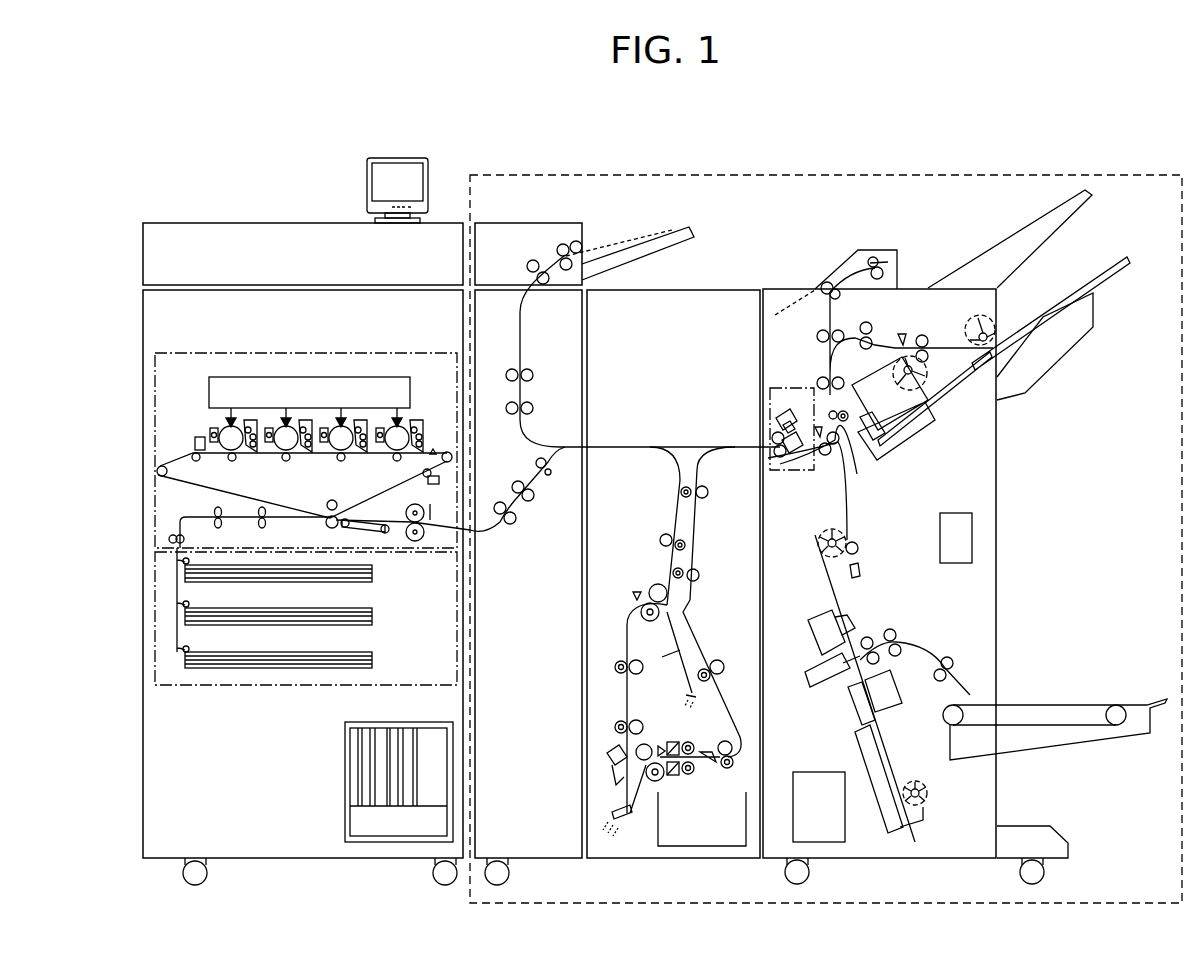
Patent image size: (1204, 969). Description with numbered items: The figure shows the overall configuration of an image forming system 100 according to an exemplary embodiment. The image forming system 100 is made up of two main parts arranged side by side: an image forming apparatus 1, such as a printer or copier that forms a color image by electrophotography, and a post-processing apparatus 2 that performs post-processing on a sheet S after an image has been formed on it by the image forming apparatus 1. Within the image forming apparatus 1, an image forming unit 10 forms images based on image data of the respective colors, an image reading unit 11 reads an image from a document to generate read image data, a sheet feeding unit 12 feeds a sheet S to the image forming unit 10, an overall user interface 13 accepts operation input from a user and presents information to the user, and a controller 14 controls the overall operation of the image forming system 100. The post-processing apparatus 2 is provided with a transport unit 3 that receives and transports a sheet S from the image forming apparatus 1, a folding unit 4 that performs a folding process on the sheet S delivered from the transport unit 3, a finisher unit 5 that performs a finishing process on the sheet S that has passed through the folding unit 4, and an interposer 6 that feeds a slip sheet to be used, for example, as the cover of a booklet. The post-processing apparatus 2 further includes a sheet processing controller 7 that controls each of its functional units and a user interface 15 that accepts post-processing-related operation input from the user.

The image forming system 100 is at (545, 165).
The image forming apparatus 1 is at (264, 222).
The post-processing apparatus 2 is at (857, 169).
The transport unit 3 is at (497, 285).
The folding unit 4 is at (730, 290).
The finisher unit 5 is at (915, 288).
The interposer 6 is at (582, 236).
The sheet processing controller 7 is at (819, 772).
The image forming unit 10 is at (296, 350).
The image reading unit 11 is at (177, 223).
The sheet feeding unit 12 is at (210, 688).
The overall user interface 13 is at (367, 183).
The controller 14 is at (345, 775).
The user interface 15 is at (972, 527).
The sheet S is at (400, 666).